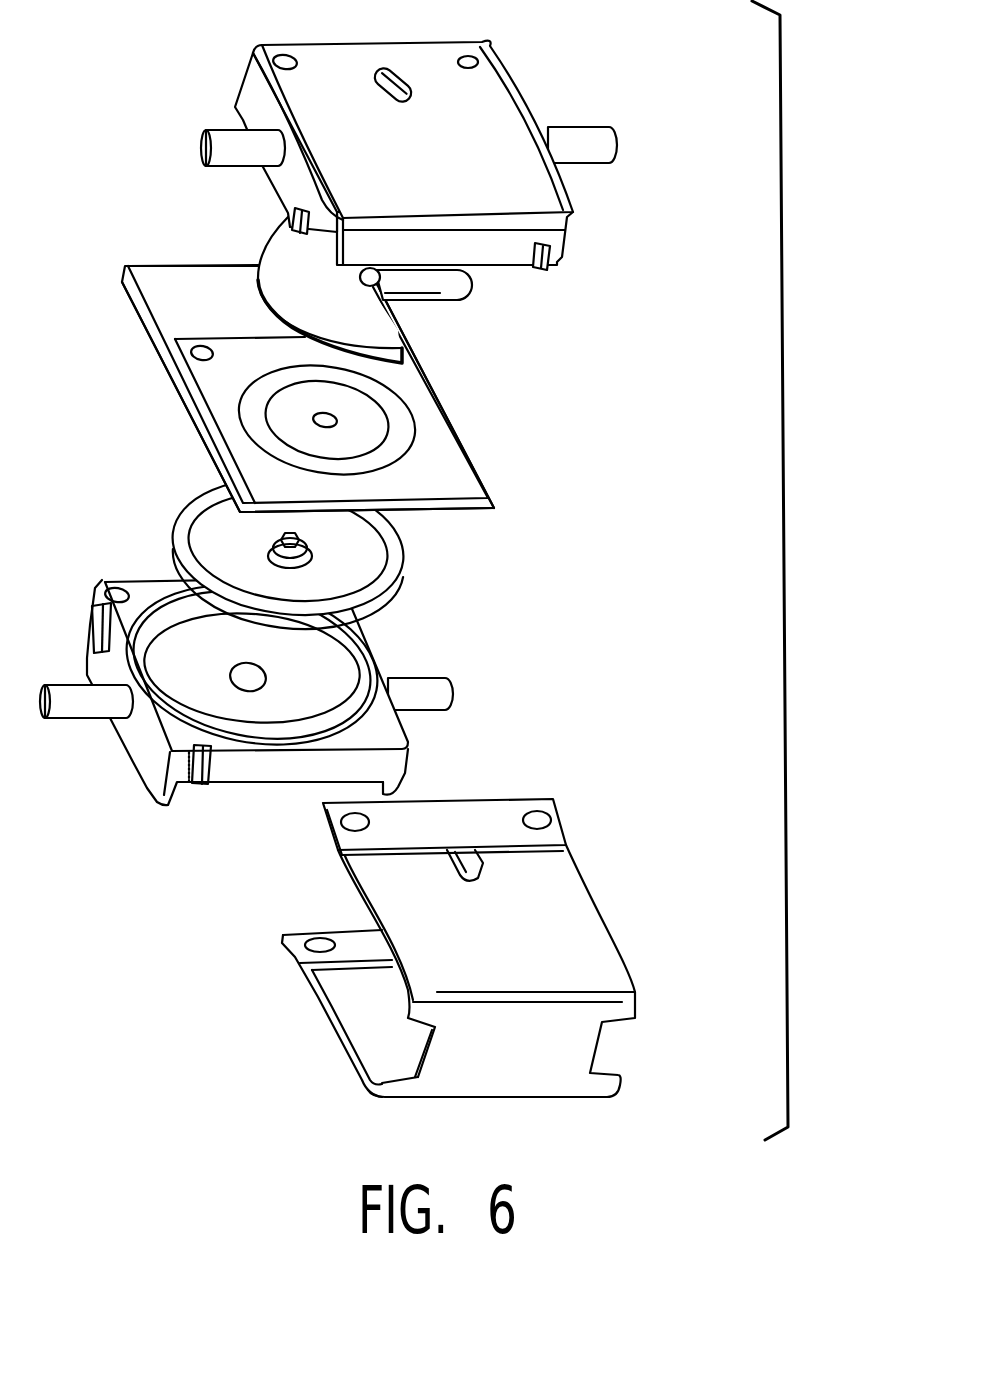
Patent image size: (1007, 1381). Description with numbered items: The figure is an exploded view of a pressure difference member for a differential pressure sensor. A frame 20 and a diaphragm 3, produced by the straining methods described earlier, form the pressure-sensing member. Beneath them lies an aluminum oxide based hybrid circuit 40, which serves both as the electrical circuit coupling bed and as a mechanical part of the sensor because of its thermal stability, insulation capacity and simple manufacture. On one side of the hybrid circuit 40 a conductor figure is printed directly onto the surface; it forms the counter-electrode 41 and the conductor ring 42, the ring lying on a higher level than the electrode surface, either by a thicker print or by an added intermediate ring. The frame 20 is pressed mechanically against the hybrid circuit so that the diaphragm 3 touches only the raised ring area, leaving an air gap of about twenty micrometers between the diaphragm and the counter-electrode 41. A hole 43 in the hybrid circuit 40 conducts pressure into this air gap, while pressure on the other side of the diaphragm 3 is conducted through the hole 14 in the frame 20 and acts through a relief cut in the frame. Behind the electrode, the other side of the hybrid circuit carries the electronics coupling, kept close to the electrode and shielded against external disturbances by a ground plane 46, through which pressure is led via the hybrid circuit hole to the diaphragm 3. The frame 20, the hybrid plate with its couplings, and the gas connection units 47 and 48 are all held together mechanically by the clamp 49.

The diaphragm 3 is at (423, 303).
The hole 14 is at (378, 266).
The frame 20 is at (457, 288).
The hybrid circuit 40 is at (492, 504).
The counter-electrode 41 is at (367, 423).
The conductor ring 42 is at (232, 382).
The hole 43 is at (317, 418).
The ground plane 46 is at (393, 587).
The gas connection unit 47 is at (393, 727).
The gas connection unit 48 is at (477, 112).
The clamp 49 is at (587, 907).